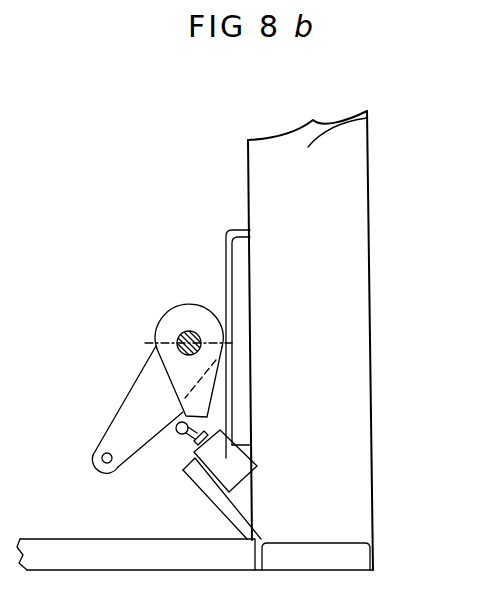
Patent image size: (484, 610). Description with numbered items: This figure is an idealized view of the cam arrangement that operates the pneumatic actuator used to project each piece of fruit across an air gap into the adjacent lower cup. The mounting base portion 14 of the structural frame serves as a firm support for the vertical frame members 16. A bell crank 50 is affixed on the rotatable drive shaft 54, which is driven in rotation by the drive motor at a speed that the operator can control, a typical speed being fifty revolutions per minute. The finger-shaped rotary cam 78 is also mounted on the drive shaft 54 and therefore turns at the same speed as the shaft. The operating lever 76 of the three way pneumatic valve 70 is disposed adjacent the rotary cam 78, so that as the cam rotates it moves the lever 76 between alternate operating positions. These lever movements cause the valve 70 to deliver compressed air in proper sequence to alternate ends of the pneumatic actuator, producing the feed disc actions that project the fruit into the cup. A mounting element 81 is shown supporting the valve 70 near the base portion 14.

The vertical frame members 16 is at (367, 121).
The mounting base portion 14 is at (41, 548).
The bell crank 50 is at (150, 375).
The rotatable drive shaft 54 is at (186, 332).
The three way pneumatic valve 70 is at (238, 470).
The operating lever 76 is at (191, 437).
The rotary cam 78 is at (208, 360).
The mounting bracket 81 is at (245, 523).